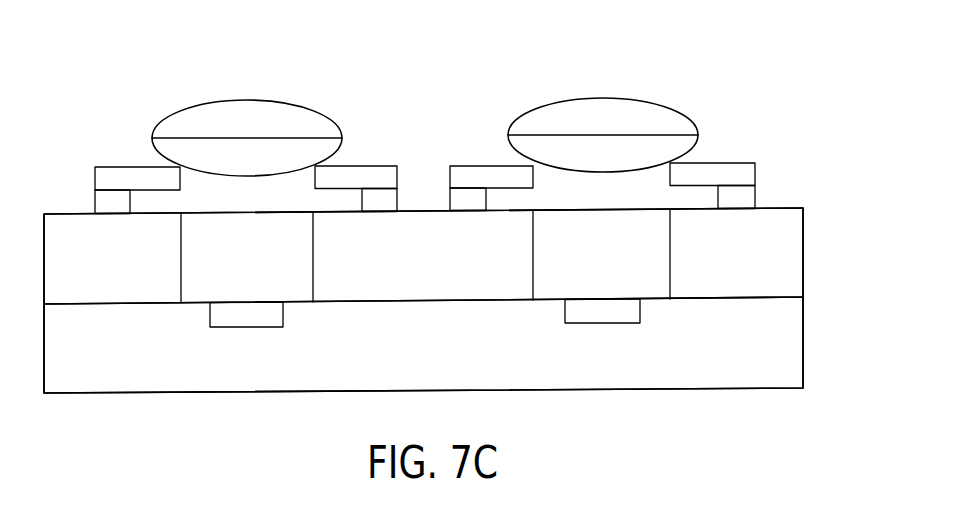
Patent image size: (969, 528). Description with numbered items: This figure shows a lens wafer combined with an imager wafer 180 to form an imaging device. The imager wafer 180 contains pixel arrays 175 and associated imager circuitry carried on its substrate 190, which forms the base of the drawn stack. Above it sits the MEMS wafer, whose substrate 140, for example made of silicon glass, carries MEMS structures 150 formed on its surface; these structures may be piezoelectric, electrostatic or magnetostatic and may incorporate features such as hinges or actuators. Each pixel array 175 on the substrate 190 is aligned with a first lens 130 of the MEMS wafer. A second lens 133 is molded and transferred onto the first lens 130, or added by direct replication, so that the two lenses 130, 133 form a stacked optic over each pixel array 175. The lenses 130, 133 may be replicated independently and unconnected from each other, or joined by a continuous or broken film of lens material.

The lens 130 is at (164, 151).
The second lens 133 is at (242, 108).
The substrate 140 is at (787, 265).
The MEMS structures 150 is at (99, 175).
The pixel array 175 is at (245, 317).
The imager wafer 180 is at (789, 340).
The substrate 190 is at (443, 370).